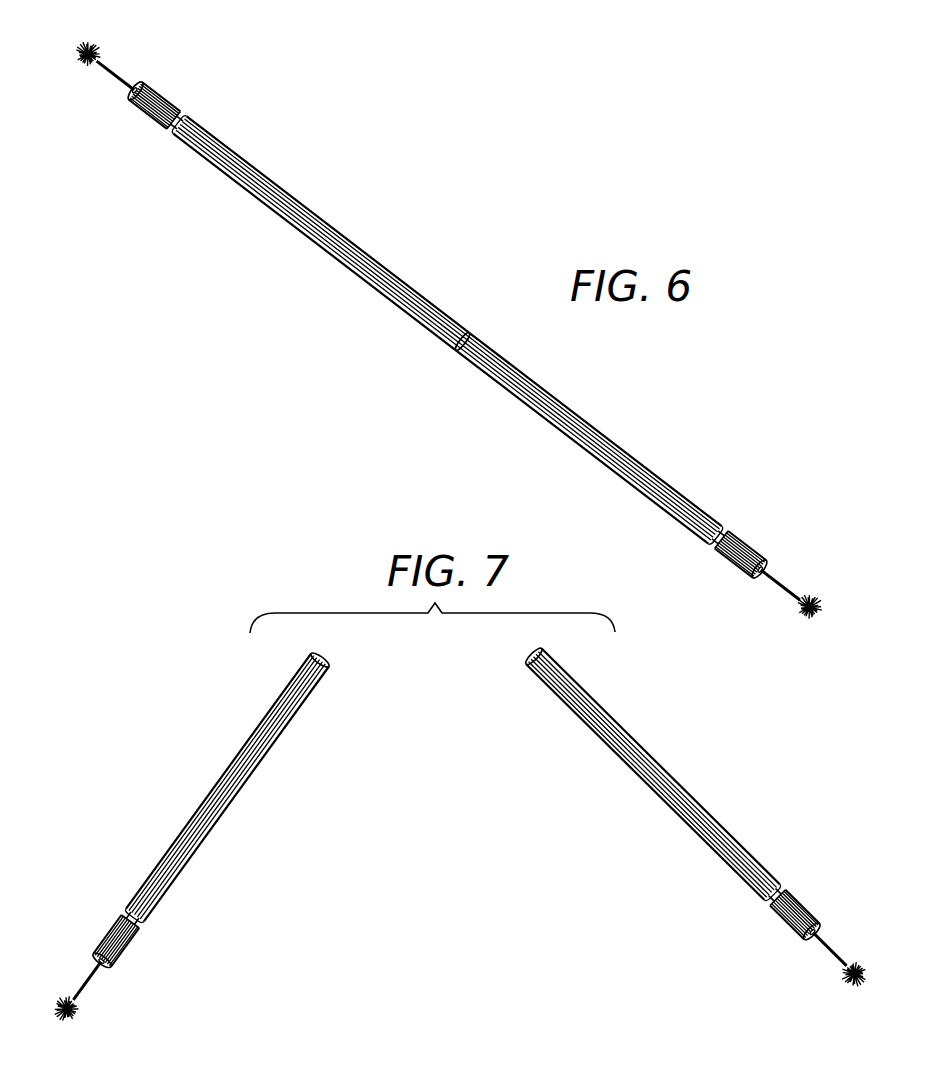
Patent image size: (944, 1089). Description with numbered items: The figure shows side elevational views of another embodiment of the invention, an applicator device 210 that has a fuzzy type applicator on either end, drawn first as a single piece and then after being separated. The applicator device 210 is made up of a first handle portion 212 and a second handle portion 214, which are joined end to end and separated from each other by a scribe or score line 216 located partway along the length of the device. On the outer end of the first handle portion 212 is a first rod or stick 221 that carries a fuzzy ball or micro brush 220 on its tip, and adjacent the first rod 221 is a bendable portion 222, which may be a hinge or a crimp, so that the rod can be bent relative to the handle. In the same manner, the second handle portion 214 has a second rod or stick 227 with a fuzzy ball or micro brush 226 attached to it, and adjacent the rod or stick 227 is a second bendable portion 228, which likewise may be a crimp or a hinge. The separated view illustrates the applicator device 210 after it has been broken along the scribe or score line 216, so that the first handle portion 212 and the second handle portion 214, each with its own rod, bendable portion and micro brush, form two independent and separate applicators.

In FIG. 6, the applicator device 210 is at (492, 268).
In FIG. 6, the first handle portion 212 is at (350, 246).
In FIG. 7, the first handle portion 212 is at (222, 786).
In FIG. 6, the second handle portion 214 is at (618, 448).
In FIG. 7, the second handle portion 214 is at (722, 826).
In FIG. 6, the scribe or score line 216 is at (455, 352).
In FIG. 6, the fuzzy ball or micro brush 220 is at (100, 48).
In FIG. 7, the fuzzy ball or micro brush 220 is at (80, 1022).
In FIG. 6, the first rod or stick 221 is at (118, 76).
In FIG. 7, the first rod or stick 221 is at (80, 990).
In FIG. 6, the bendable portion 222 is at (178, 122).
In FIG. 7, the bendable portion 222 is at (140, 928).
In FIG. 6, the fuzzy ball or micro brush 226 is at (816, 598).
In FIG. 7, the fuzzy ball or micro brush 226 is at (845, 988).
In FIG. 6, the second rod or stick 227 is at (778, 580).
In FIG. 7, the second rod or stick 227 is at (832, 950).
In FIG. 6, the second bendable portion 228 is at (716, 538).
In FIG. 7, the second bendable portion 228 is at (770, 893).